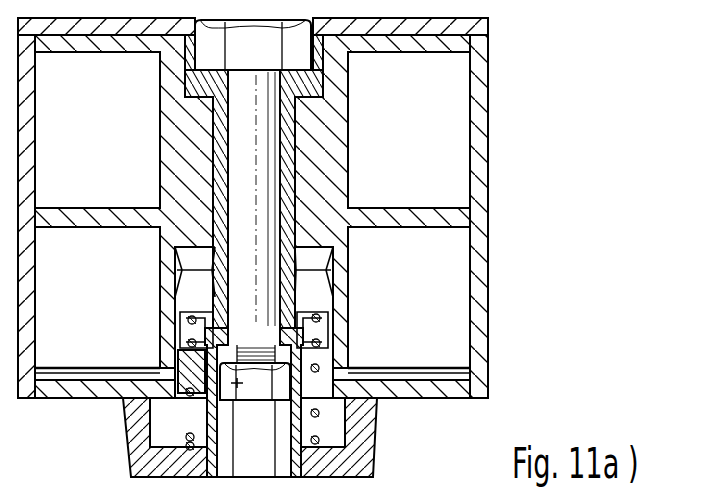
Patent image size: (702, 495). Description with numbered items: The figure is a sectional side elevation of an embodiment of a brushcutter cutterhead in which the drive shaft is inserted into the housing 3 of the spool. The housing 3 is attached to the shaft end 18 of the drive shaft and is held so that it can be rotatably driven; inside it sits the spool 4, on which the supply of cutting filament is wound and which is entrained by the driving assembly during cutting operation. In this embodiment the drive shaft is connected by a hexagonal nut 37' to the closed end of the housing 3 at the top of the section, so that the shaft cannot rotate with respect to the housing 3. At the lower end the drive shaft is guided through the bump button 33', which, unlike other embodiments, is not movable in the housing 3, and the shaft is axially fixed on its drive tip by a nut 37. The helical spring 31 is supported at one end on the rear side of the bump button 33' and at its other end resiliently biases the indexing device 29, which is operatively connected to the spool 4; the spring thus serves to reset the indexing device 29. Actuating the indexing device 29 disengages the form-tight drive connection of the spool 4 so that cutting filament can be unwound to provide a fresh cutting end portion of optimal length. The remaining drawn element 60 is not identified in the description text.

The housing 3 is at (478, 183).
The spool 4 is at (333, 156).
The shaft end 18 is at (248, 328).
The indexing device 29 is at (327, 338).
The helical spring 31 is at (318, 366).
The bump button 33' is at (289, 437).
The nut 37 is at (196, 362).
The hexagonal nut 37' is at (193, 174).
The nut 60 is at (256, 396).